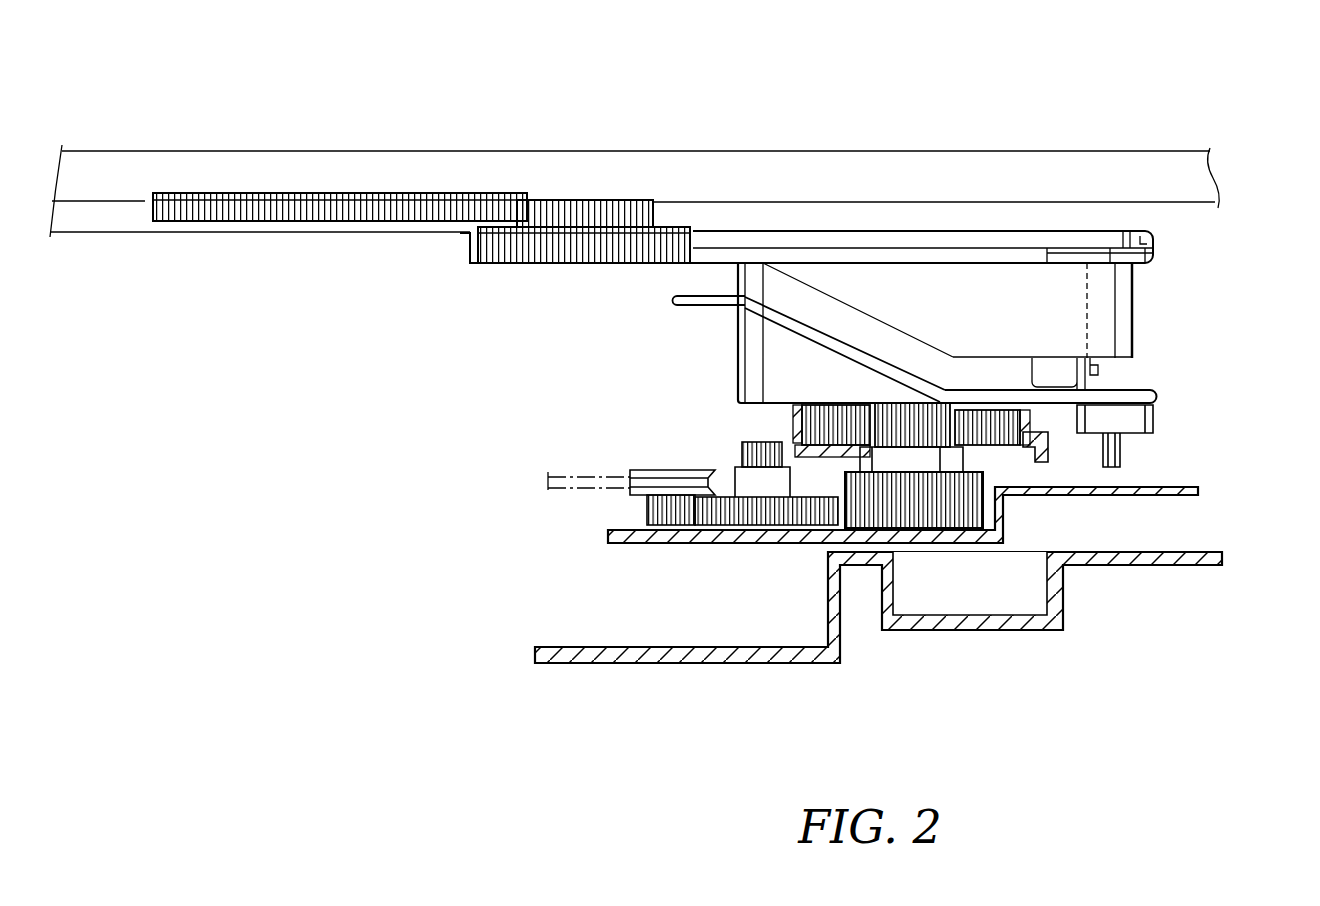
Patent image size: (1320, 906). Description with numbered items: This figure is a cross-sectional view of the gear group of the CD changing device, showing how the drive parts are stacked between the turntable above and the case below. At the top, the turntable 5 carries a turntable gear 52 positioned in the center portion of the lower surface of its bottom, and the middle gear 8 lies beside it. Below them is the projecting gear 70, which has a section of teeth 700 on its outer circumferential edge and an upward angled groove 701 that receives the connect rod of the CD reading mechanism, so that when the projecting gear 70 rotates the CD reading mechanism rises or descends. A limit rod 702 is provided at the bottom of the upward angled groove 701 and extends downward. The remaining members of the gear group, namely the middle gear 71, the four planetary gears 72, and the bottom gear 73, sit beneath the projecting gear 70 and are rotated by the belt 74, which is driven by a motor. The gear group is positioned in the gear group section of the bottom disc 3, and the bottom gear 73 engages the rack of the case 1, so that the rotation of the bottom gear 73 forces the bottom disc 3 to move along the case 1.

The case 1 is at (1177, 562).
The bottom disc 3 is at (1175, 497).
The turntable 5 is at (1078, 166).
The middle gear 8 is at (568, 205).
The turntable gear 52 is at (340, 200).
The projecting gear 70 is at (1133, 312).
The section of teeth 700 is at (700, 240).
The upward angled groove 701 is at (808, 310).
The limit rod 702 is at (1122, 447).
The middle gear 71 is at (1050, 447).
The planetary gears 72 is at (800, 427).
The bottom gear 73 is at (867, 508).
The belt 74 is at (565, 487).